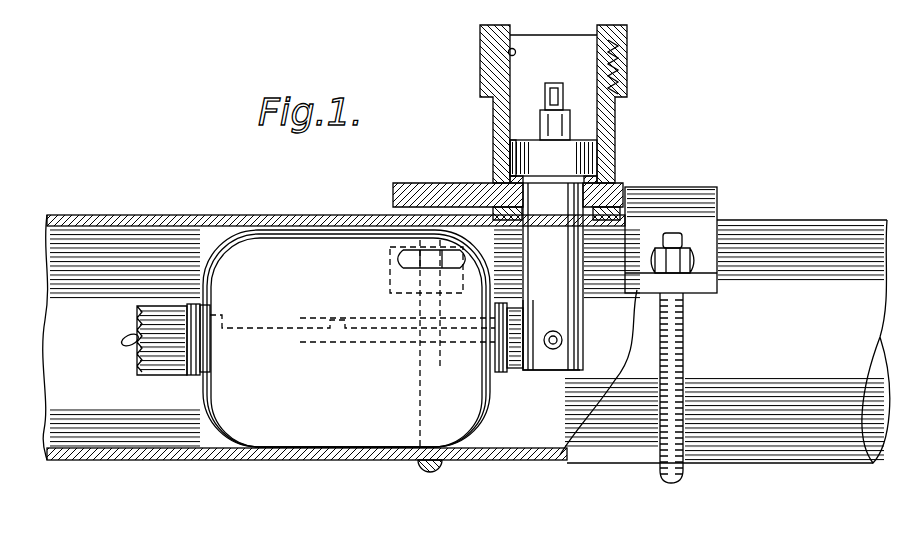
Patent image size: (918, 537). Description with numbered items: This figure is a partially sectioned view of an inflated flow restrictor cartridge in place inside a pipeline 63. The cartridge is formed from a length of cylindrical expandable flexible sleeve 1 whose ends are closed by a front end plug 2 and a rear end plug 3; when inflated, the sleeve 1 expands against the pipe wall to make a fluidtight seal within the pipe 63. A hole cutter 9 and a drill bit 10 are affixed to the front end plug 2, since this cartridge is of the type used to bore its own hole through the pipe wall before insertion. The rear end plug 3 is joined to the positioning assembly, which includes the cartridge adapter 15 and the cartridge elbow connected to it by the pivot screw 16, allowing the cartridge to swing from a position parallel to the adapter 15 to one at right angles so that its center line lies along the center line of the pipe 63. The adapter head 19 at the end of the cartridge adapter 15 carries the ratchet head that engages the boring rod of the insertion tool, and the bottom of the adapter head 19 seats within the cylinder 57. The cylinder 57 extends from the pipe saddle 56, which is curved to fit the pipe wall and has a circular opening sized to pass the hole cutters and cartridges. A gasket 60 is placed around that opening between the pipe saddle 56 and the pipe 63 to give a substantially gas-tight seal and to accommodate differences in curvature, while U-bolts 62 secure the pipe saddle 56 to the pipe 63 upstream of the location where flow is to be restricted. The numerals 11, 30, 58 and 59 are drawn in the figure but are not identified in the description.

The expandable flexible sleeve 1 is at (321, 243).
The front end plug 2 is at (190, 375).
The rear end plug 3 is at (516, 370).
The hole cutter 9 is at (147, 376).
The drill bit 10 is at (127, 333).
The nut 11 is at (195, 377).
The cartridge adapter 15 is at (580, 253).
The pivot screw 16 is at (560, 342).
The adapter head 19 is at (583, 158).
The bushing 30 is at (512, 148).
The pipe saddle 56 is at (698, 188).
The cylinder 57 is at (495, 105).
The sensor element 58 is at (587, 115).
The vent opening 59 is at (508, 51).
The gasket 60 is at (515, 178).
The U-bolts 62 is at (420, 470).
The pipeline 63 is at (158, 215).